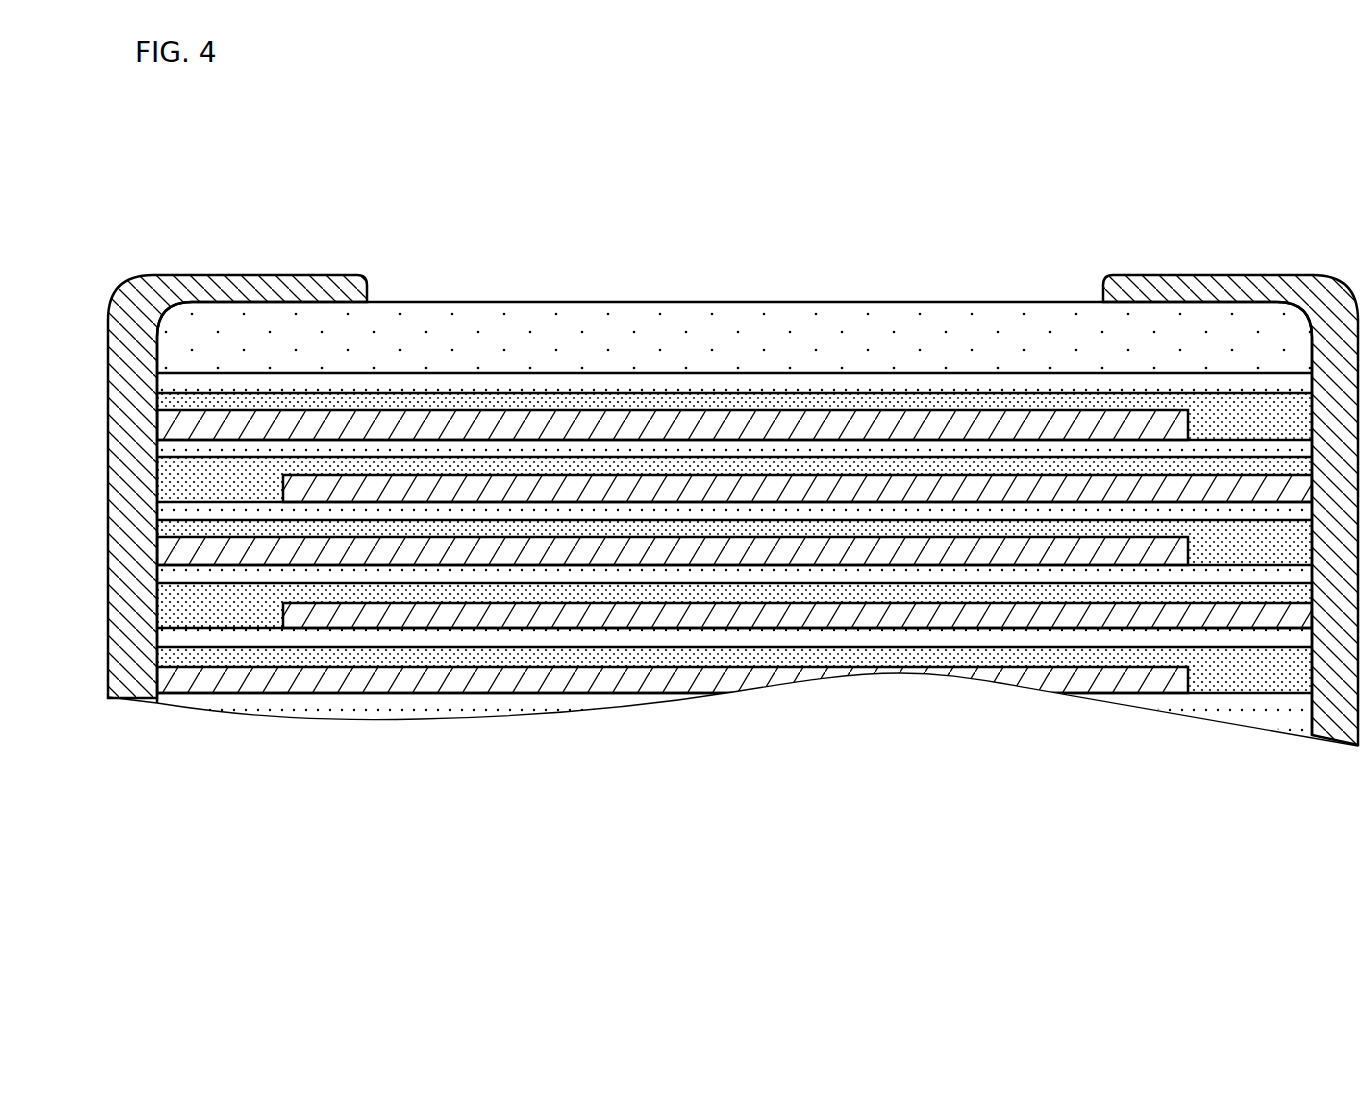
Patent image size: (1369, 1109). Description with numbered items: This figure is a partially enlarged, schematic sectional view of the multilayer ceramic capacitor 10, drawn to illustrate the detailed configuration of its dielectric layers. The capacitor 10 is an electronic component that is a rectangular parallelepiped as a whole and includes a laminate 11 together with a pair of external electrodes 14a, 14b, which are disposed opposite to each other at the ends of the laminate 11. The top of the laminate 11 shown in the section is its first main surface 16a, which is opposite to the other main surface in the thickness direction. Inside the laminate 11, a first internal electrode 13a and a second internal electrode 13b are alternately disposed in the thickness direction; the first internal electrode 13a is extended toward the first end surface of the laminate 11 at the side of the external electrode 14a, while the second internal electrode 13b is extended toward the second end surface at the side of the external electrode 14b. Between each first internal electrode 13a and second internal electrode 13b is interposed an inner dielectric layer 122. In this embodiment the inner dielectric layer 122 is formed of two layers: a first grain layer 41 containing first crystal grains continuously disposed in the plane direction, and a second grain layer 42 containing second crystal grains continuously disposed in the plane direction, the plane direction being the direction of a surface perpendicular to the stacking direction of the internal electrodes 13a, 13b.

The multilayer ceramic capacitor 10 is at (783, 173).
The laminate 11 is at (716, 290).
The first internal electrode 13a is at (1158, 420).
The second internal electrode 13b is at (538, 618).
The external electrode 14a is at (246, 273).
The external electrode 14b is at (1235, 274).
The first main surface 16a is at (545, 300).
The first grain layer 41 is at (1010, 385).
The second grain layer 42 is at (1080, 405).
The inner dielectric layer 122 is at (420, 900).